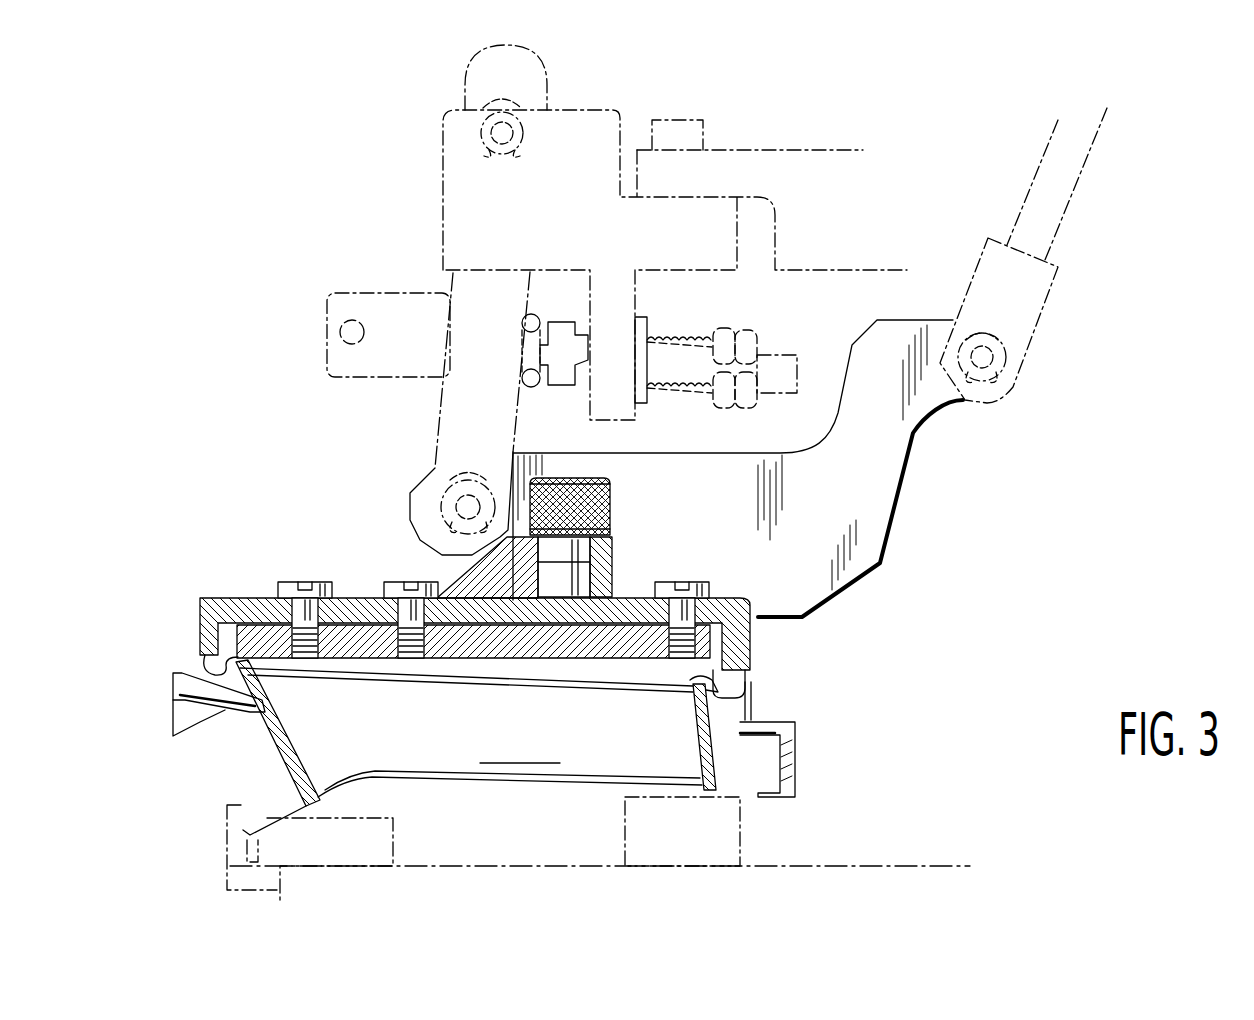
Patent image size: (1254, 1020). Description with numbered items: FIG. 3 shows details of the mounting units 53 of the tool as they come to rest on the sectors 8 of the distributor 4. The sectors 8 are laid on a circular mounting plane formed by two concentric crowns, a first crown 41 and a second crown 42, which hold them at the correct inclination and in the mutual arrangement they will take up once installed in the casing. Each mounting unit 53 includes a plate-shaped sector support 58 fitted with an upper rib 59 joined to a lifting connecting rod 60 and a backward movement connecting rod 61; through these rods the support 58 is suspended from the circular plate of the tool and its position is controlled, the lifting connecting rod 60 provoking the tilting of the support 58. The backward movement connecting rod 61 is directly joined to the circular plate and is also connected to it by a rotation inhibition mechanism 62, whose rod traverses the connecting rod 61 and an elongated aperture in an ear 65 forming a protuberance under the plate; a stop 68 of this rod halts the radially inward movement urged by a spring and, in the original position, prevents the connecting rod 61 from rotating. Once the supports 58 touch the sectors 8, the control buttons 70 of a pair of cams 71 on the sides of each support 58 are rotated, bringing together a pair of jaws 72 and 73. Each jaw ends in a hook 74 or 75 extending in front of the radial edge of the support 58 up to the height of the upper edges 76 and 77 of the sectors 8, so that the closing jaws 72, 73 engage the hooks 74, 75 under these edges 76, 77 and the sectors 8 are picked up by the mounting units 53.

The distributor 4 is at (462, 750).
The sectors 8 is at (779, 802).
The first crown 41 is at (657, 833).
The second crown 42 is at (242, 876).
The mounting units 53 is at (772, 150).
The sector support 58 is at (362, 640).
The upper rib 59 is at (853, 508).
The lifting connecting rod 60 is at (1087, 148).
The backward movement connecting rod 61 is at (467, 287).
The rotation inhibition mechanism 62 is at (322, 350).
The ear 65 is at (473, 170).
The stop 68 is at (560, 322).
The control buttons 70 is at (585, 478).
The cams 71 is at (605, 548).
The jaw 72 is at (250, 602).
The jaw 73 is at (645, 600).
The hook 74 is at (197, 646).
The hook 75 is at (757, 647).
The upper edge 76 is at (262, 668).
The upper edge 77 is at (690, 684).